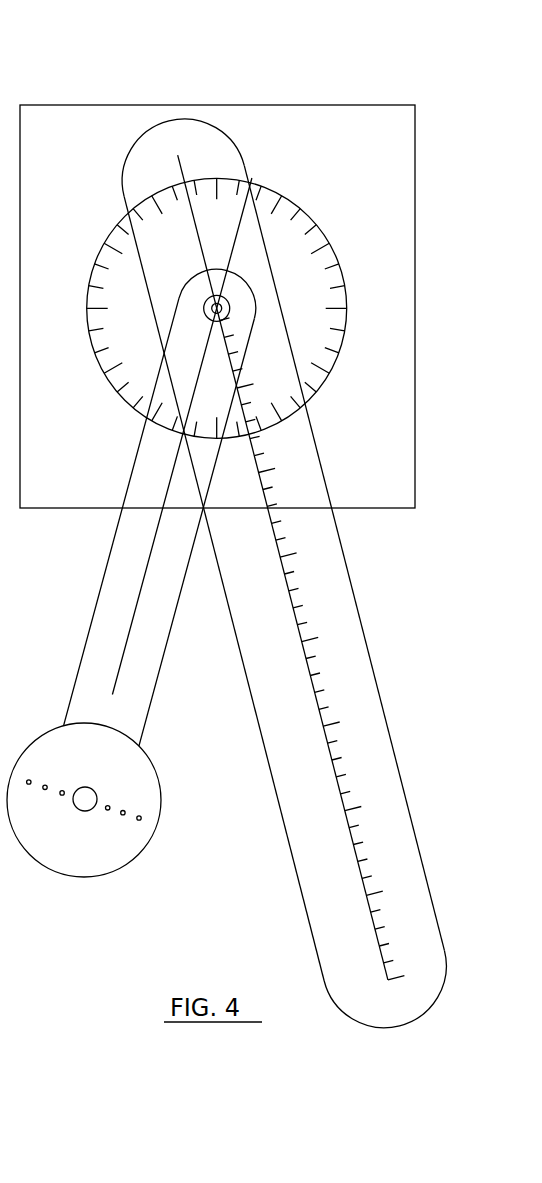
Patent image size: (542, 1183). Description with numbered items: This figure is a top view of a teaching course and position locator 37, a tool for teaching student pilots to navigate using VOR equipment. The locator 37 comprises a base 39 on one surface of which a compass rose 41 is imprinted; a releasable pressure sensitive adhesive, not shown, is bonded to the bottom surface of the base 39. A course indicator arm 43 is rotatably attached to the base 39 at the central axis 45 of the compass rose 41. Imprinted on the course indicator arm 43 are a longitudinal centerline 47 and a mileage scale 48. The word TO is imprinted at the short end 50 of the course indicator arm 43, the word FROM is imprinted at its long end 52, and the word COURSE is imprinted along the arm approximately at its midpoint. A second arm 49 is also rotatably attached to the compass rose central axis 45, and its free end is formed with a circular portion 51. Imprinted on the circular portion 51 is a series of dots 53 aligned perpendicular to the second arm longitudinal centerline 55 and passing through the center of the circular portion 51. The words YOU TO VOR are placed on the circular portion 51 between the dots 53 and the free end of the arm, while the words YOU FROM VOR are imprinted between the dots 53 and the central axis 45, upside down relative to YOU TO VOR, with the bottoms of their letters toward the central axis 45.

The course and position locator 37 is at (275, 102).
The base 39 is at (416, 207).
The compass rose 41 is at (308, 213).
The course indicator arm 43 is at (410, 822).
The central axis 45 is at (244, 168).
The longitudinal centerline 47 is at (343, 750).
The mileage scale 48 is at (343, 627).
The second arm 49 is at (151, 700).
The short end 50 is at (155, 150).
The circular portion 51 is at (100, 853).
The long end 52 is at (337, 973).
The dots 53 is at (142, 817).
The second arm longitudinal centerline 55 is at (125, 657).